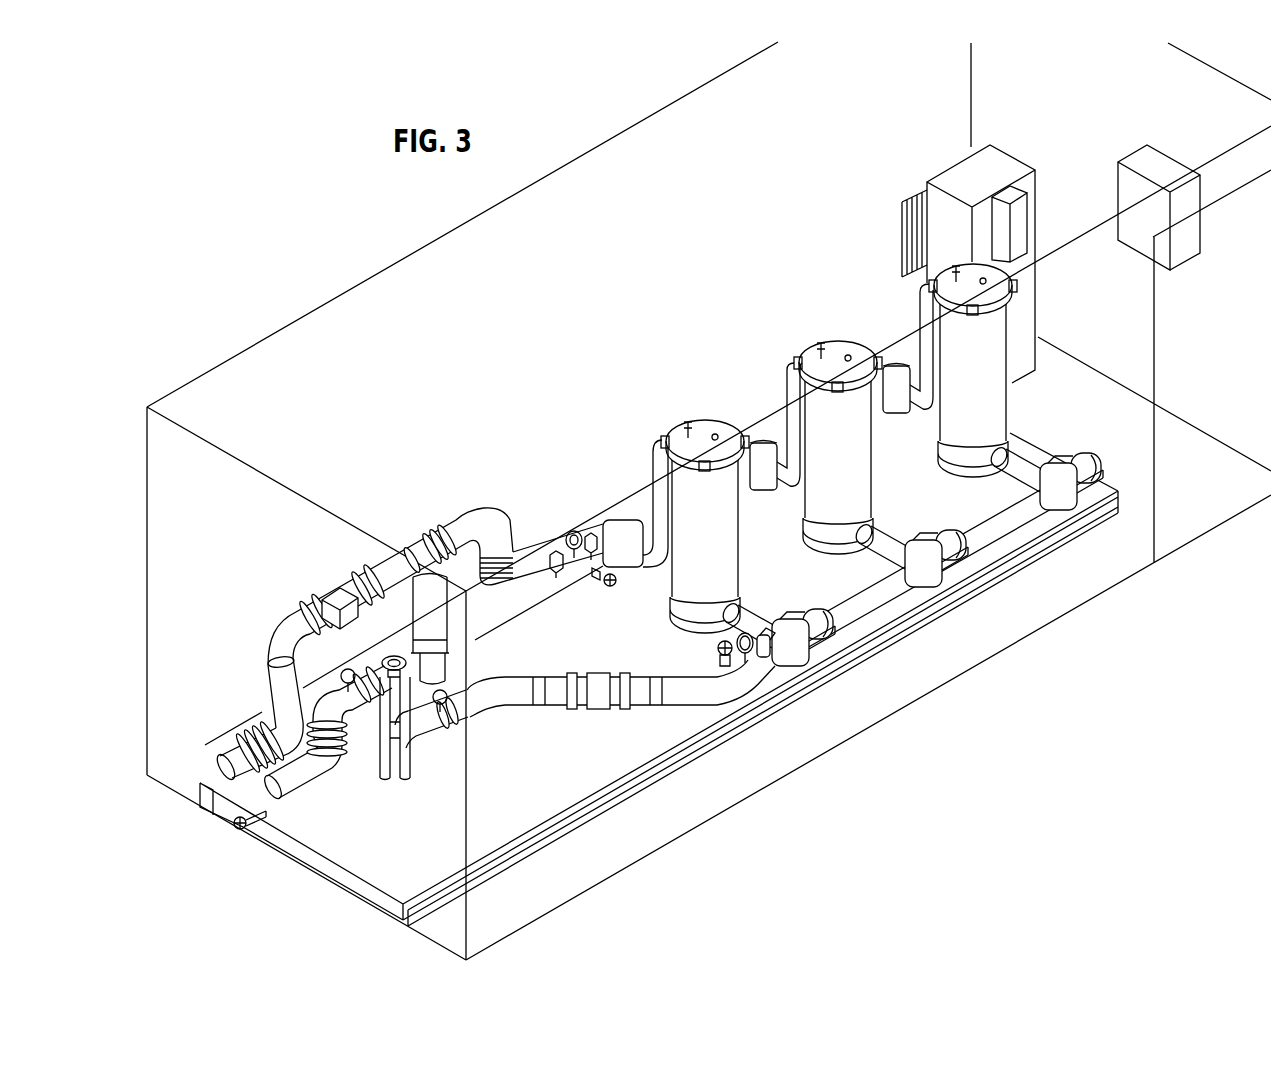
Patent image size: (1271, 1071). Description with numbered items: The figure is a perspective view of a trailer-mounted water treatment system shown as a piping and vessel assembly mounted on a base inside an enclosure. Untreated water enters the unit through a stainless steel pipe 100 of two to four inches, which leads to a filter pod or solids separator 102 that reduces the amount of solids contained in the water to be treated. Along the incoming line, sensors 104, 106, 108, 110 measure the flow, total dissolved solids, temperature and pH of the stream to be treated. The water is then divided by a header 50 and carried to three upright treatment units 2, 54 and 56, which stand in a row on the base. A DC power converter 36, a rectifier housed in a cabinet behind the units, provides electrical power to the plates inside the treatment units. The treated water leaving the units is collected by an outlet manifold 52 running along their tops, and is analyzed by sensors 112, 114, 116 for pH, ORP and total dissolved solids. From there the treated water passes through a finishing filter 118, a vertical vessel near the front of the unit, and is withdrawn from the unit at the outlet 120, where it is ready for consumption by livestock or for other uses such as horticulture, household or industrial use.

The treatment unit 2 is at (714, 546).
The DC power converter 36 is at (997, 167).
The header 50 is at (875, 620).
The outlet manifold 52 is at (776, 435).
The treatment unit 54 is at (852, 467).
The treatment unit 56 is at (988, 391).
The stainless steel pipe 100 is at (318, 801).
The filter pod or solids separator 102 is at (400, 707).
The sensor 104 is at (598, 709).
The sensor 106 is at (730, 667).
The sensor 108 is at (748, 660).
The sensor 110 is at (764, 657).
The sensor 112 is at (590, 533).
The sensor 114 is at (573, 531).
The sensor 116 is at (552, 553).
The finishing filter 118 is at (435, 623).
The outlet 120 is at (249, 709).